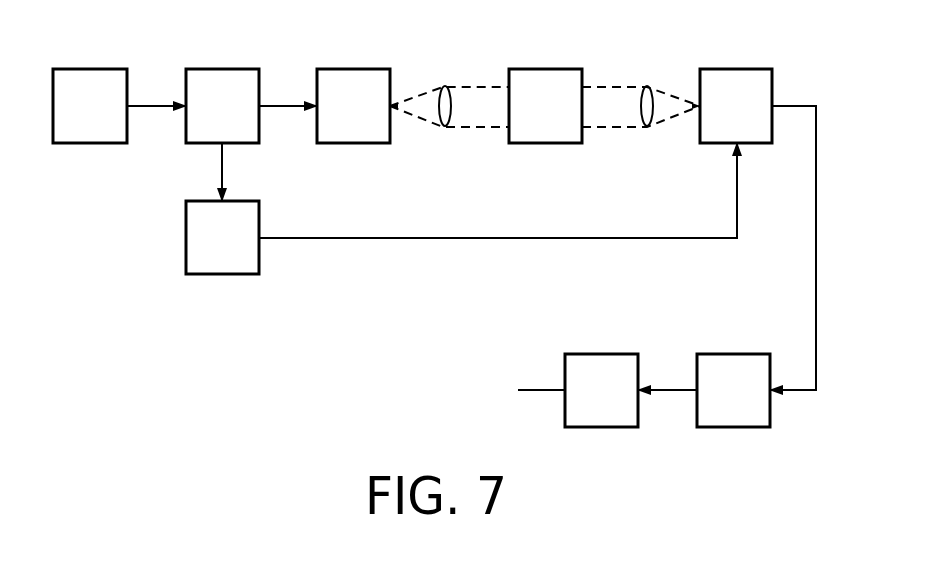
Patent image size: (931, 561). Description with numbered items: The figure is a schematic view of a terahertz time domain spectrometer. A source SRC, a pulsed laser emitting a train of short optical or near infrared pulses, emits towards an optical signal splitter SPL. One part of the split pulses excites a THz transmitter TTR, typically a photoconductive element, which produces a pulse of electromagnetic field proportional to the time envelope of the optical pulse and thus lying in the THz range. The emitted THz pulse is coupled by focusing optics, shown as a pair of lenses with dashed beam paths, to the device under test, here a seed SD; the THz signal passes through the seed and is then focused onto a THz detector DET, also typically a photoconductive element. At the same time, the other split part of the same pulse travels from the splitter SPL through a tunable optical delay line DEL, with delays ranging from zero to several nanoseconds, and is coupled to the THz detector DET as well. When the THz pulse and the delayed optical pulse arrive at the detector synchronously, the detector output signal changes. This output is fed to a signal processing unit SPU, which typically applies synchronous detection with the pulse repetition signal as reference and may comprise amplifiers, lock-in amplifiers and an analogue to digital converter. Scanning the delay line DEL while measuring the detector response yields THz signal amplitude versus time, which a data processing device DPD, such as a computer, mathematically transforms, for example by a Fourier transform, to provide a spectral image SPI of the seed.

The source SRC is at (96, 69).
The optical signal splitter SPL is at (226, 69).
The THz transmitter TTR is at (359, 69).
The seed SD is at (549, 69).
The THz detector DET is at (741, 69).
The tunable optical delay line DEL is at (186, 238).
The data processing device DPD is at (609, 354).
The signal processing unit SPU is at (741, 354).
The spectral image SPI is at (541, 375).